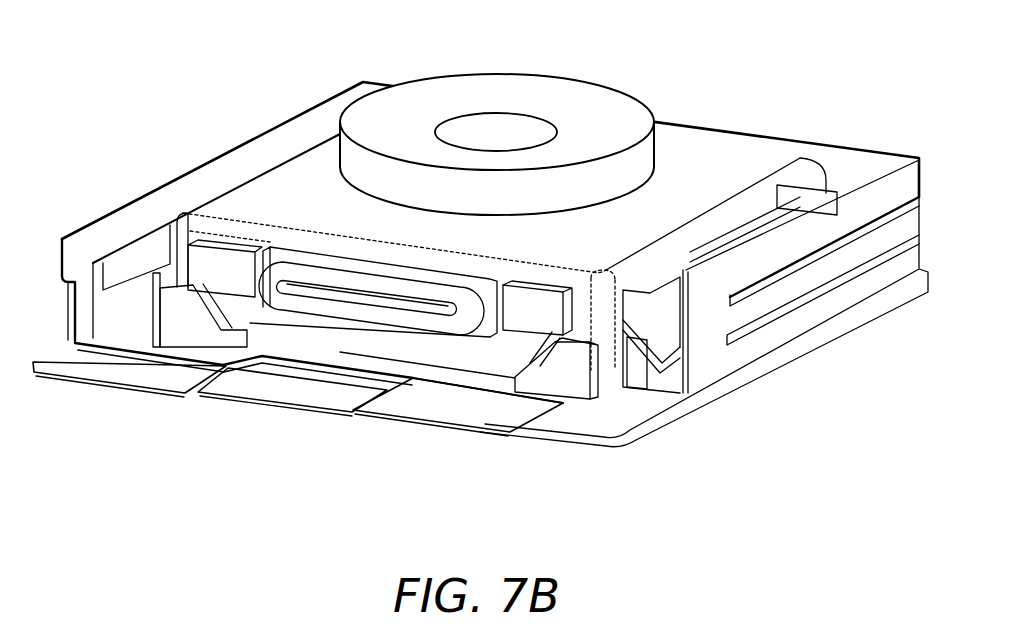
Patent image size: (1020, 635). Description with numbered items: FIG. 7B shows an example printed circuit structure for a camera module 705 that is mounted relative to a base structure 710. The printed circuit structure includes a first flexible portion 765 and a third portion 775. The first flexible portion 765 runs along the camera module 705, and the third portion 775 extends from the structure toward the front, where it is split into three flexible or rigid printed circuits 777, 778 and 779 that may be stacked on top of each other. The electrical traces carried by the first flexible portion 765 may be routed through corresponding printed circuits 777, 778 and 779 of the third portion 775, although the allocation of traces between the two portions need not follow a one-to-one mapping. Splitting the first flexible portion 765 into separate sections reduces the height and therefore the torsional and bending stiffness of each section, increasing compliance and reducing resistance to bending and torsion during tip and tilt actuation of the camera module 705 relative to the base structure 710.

The first flexible portion 765 is at (283, 130).
The camera module 705 is at (733, 167).
The base structure 710 is at (648, 420).
The printed circuit 777 is at (155, 372).
The printed circuit 778 is at (340, 400).
The printed circuit 779 is at (477, 423).
The third portion 775 is at (503, 480).